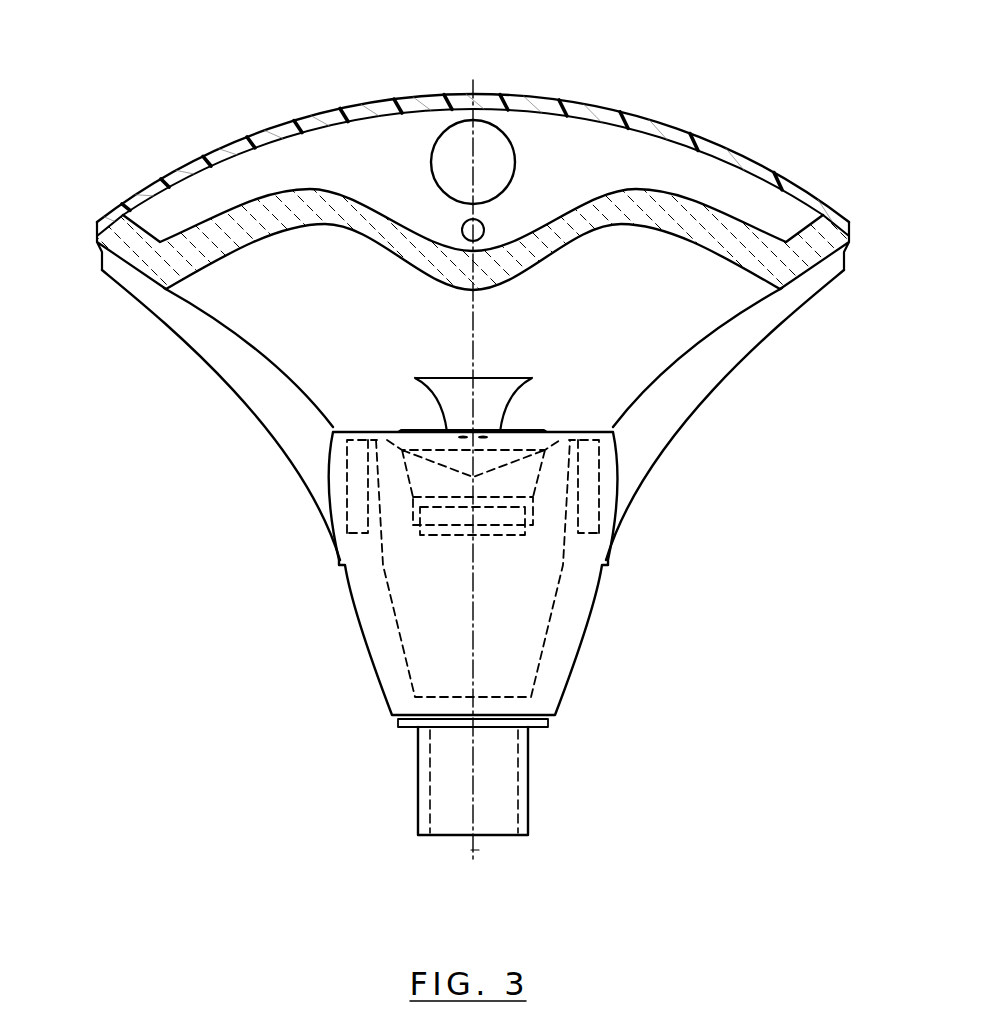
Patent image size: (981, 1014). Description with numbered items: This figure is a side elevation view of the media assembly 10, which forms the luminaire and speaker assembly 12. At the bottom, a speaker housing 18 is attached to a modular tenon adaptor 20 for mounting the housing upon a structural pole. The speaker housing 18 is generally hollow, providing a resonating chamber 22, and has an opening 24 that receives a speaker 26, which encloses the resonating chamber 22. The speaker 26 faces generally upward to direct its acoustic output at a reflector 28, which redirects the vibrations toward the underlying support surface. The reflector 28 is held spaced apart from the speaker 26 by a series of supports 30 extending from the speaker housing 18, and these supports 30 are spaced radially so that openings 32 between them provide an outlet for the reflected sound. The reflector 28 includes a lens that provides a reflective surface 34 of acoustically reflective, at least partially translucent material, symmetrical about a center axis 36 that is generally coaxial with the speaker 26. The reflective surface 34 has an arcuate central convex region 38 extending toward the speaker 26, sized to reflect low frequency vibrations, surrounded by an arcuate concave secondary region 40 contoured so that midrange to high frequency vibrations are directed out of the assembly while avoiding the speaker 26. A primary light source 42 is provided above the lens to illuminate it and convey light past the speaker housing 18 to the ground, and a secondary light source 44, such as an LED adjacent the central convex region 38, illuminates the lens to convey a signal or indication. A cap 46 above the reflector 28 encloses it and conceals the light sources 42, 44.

The media assembly 10 is at (769, 66).
The luminaire and speaker assembly 12 is at (803, 168).
The speaker housing 18 is at (355, 603).
The modular tenon adaptor 20 is at (528, 772).
The resonating chamber 22 is at (400, 650).
The opening 24 is at (588, 432).
The speaker 26 is at (527, 432).
The reflector 28 is at (197, 284).
The supports 30 is at (753, 338).
The openings 32 is at (697, 350).
The reflective surface 34 is at (222, 259).
The center axis 36 is at (478, 852).
The central convex region 38 is at (425, 276).
The secondary region 40 is at (710, 255).
The primary light source 42 is at (491, 124).
The secondary light source 44 is at (486, 230).
The cap 46 is at (667, 124).